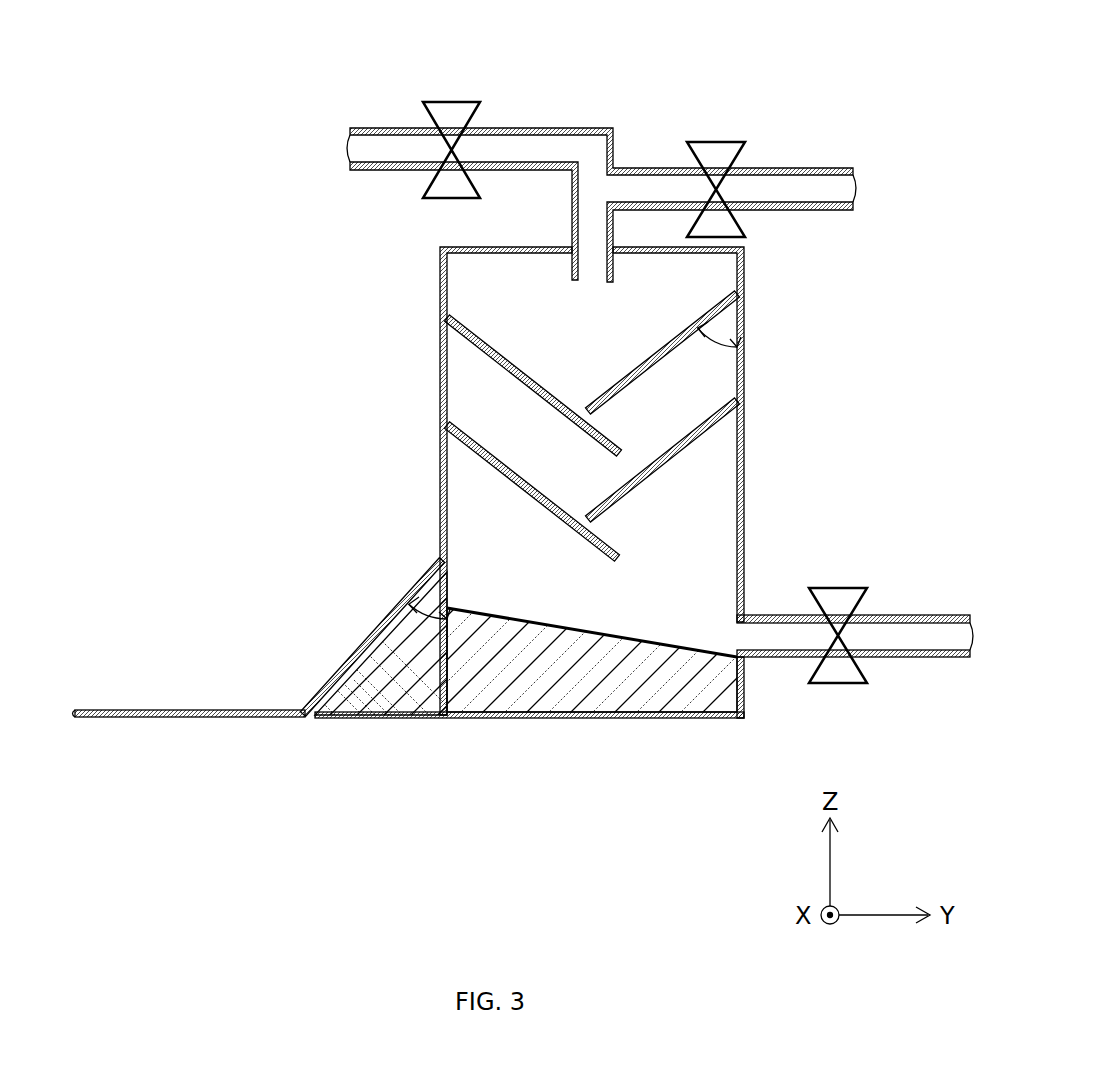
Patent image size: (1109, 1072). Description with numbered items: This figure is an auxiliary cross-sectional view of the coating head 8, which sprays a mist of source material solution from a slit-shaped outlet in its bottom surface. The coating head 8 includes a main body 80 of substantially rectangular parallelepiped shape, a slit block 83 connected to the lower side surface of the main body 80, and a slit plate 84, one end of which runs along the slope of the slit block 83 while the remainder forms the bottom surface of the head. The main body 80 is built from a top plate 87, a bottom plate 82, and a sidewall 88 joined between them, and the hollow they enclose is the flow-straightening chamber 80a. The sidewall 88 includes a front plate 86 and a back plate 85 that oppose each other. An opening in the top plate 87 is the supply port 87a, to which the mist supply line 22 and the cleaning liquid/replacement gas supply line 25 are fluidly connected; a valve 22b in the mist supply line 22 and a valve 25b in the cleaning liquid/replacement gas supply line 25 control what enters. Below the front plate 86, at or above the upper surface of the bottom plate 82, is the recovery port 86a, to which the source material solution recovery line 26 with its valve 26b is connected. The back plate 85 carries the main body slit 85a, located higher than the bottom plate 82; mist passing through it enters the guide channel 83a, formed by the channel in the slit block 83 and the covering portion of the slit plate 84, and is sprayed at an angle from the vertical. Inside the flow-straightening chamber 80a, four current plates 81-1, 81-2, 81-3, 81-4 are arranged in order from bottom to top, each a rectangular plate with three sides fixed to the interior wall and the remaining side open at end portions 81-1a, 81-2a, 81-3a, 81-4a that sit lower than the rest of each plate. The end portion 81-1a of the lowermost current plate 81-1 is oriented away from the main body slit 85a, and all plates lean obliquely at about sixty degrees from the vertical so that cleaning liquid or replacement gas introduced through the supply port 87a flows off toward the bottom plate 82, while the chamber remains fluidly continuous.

The coating head 8 is at (848, 70).
The mist supply line 22 is at (392, 127).
The valve 22b is at (452, 101).
The cleaning liquid/replacement gas supply line 25 is at (805, 168).
The valve 25b is at (716, 142).
The source material solution recovery line 26 is at (918, 615).
The valve 26b is at (838, 588).
The main body 80 is at (603, 460).
The flow-straightening chamber 80a is at (520, 300).
The current plate 81-1 is at (493, 466).
The end portion 81-1a is at (615, 560).
The current plate 81-2 is at (697, 440).
The end portion 81-2a is at (592, 519).
The current plate 81-3 is at (512, 377).
The end portion 81-3a is at (620, 455).
The current plate 81-4 is at (663, 358).
The end portion 81-4a is at (590, 411).
The bottom plate 82 is at (620, 720).
The slit block 83 is at (395, 720).
The guide channel 83a is at (375, 638).
The slit plate 84 is at (270, 710).
The back plate 85 is at (440, 503).
The main body slit 85a is at (448, 565).
The front plate 86 is at (745, 387).
The recovery port 86a is at (747, 637).
The top plate 87 is at (485, 247).
The supply port 87a is at (575, 280).
The sidewall 88 is at (745, 500).